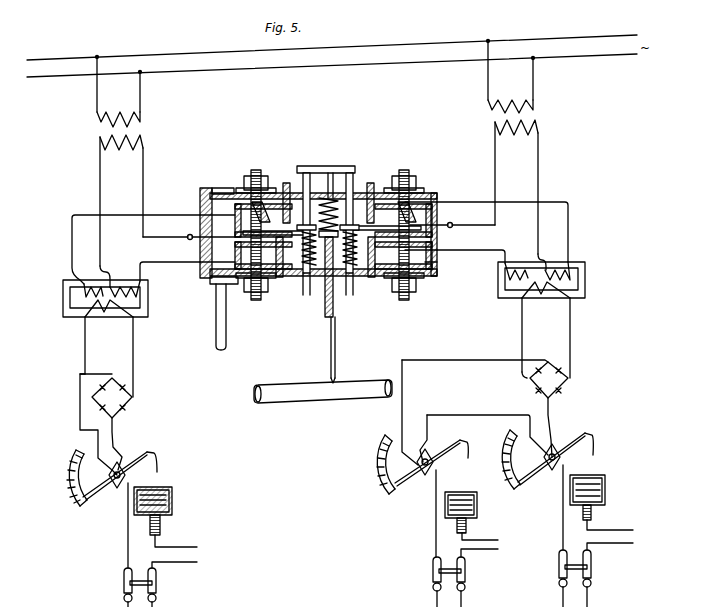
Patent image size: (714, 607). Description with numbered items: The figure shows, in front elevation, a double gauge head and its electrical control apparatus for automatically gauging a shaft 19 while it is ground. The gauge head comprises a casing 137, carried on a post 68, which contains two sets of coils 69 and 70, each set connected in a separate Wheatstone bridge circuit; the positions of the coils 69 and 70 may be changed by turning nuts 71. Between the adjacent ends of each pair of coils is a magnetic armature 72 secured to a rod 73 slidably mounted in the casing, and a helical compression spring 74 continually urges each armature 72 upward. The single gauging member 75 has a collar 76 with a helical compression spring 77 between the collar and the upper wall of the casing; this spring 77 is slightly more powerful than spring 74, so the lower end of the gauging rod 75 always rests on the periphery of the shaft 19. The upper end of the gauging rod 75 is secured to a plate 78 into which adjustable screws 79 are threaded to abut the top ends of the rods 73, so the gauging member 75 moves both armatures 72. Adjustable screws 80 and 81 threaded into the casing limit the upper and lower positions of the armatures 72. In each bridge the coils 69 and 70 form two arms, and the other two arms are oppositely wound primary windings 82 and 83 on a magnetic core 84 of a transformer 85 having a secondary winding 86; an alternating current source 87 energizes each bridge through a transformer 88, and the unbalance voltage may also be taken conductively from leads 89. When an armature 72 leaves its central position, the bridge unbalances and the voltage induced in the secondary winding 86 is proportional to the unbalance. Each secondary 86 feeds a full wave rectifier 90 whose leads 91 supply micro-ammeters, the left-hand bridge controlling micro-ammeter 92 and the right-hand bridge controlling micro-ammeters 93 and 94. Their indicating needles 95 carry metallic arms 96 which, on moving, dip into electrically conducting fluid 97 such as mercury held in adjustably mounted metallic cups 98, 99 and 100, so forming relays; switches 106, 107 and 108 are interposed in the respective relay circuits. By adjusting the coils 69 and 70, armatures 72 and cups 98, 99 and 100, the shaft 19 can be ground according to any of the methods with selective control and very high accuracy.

The shaft 19 is at (312, 398).
The post 68 is at (216, 329).
The coil 69 is at (264, 200).
The coil 70 is at (246, 284).
The nuts 71 is at (244, 182).
The armature 72 is at (302, 285).
The rod 73 is at (328, 223).
The helical compression spring 74 is at (312, 268).
The gauging rod 75 is at (336, 366).
The collar 76 is at (324, 300).
The helical compression spring 77 is at (340, 206).
The plate 78 is at (338, 166).
The adjustable screw 79 is at (306, 166).
The adjustable screw 80 is at (287, 183).
The adjustable screw 81 is at (281, 278).
The primary winding 82 is at (86, 278).
The primary winding 83 is at (125, 280).
The magnetic core 84 is at (148, 292).
The transformer 85 is at (63, 300).
The secondary winding 86 is at (110, 330).
The alternating current source 87 is at (390, 48).
The transformer 88 is at (136, 130).
The leads 89 is at (168, 213).
The full wave rectifier 90 is at (120, 412).
The leads 91 is at (98, 421).
The micro-ammeter 92 is at (82, 506).
The micro-ammeter 93 is at (390, 494).
The micro-ammeter 94 is at (515, 489).
The indicating needle 95 is at (106, 482).
The metallic arm 96 is at (158, 462).
The electrically conducting fluid 97 is at (155, 494).
The metallic cup 98 is at (172, 505).
The metallic cup 99 is at (477, 512).
The metallic cup 100 is at (605, 488).
The switch 106 is at (122, 582).
The switch 107 is at (431, 570).
The switch 108 is at (558, 562).
The casing 137 is at (437, 270).